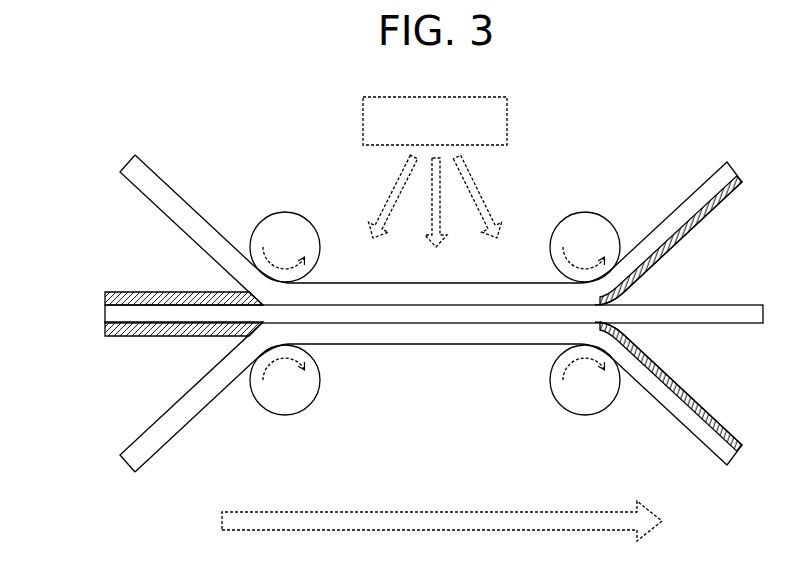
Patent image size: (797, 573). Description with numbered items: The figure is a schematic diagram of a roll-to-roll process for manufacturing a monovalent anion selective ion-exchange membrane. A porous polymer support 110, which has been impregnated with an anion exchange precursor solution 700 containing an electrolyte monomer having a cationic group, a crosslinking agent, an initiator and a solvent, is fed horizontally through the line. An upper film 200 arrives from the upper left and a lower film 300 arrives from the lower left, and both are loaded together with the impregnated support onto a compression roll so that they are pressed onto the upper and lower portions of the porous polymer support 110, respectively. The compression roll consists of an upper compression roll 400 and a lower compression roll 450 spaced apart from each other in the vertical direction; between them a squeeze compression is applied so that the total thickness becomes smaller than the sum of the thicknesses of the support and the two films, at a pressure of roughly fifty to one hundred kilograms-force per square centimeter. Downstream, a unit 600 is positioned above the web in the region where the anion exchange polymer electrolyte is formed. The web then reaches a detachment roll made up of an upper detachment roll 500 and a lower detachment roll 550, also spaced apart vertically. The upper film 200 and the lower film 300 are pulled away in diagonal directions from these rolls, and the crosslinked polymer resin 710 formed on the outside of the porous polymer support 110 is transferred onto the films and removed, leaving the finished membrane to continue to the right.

The porous polymer support 110 is at (105, 313).
The upper film 200 is at (178, 202).
The lower film 300 is at (183, 423).
The upper compression roll 400 is at (285, 214).
The lower compression roll 450 is at (283, 413).
The upper detachment roll 500 is at (585, 214).
The lower detachment roll 550 is at (583, 413).
The light irradiation unit 600 is at (435, 172).
The anion exchange precursor solution 700 is at (147, 292).
The crosslinked polymer resin 710 is at (710, 215).